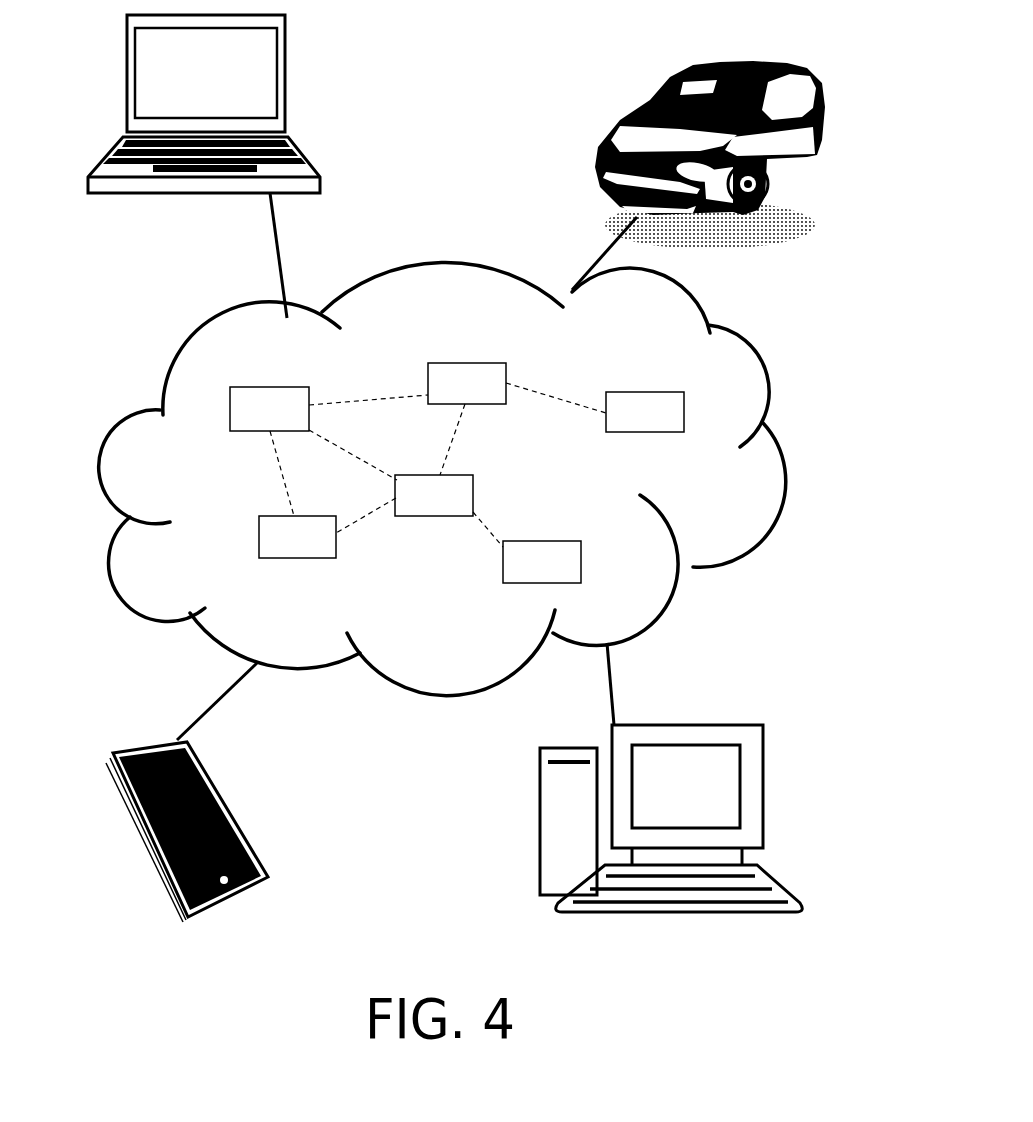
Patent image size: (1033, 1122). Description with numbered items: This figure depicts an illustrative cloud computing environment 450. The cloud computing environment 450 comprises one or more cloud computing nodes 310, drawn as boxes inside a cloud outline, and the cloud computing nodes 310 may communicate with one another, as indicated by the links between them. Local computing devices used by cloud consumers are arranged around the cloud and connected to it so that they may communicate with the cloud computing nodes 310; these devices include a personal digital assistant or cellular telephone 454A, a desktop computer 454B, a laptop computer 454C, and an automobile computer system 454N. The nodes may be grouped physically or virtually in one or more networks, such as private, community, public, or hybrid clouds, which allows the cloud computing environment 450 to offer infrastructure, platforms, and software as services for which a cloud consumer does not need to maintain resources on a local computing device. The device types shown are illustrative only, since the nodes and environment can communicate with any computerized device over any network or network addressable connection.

The cloud computing node 310 is at (457, 473).
The cloud computing environment 450 is at (157, 393).
The personal digital assistant (PDA) or cellular telephone 454A is at (114, 757).
The desktop computer 454B is at (538, 866).
The laptop computer 454C is at (124, 90).
The automobile computer system 454N is at (597, 162).